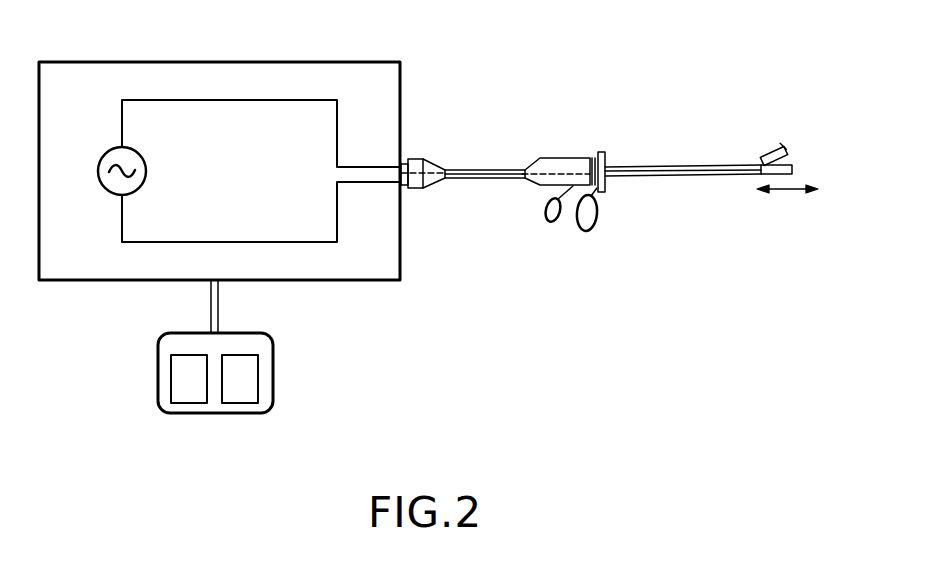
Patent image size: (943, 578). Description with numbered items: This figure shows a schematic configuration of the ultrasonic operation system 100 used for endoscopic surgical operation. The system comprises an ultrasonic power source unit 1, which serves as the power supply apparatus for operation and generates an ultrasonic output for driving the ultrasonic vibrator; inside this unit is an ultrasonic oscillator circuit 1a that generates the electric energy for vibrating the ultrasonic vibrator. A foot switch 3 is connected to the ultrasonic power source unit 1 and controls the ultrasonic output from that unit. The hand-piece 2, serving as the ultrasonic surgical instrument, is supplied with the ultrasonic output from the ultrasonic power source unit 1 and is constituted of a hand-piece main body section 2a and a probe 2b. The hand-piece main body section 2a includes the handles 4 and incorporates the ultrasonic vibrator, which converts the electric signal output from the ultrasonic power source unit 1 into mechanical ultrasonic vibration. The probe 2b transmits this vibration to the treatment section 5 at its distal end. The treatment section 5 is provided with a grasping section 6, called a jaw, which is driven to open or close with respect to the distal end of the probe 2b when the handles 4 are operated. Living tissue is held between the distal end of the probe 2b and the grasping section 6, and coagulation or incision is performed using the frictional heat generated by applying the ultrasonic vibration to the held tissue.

The treatment system 100 is at (438, 28).
The ultrasonic power source unit 1 is at (400, 75).
The ultrasonic oscillator circuit 1a is at (108, 147).
The hand-piece 2 is at (675, 131).
The hand-piece main body section 2a is at (555, 163).
The probe 2b is at (793, 168).
The foot switch 3 is at (273, 366).
The handles 4 is at (596, 225).
The treatment section 5 is at (769, 152).
The grasping section 6 is at (787, 152).